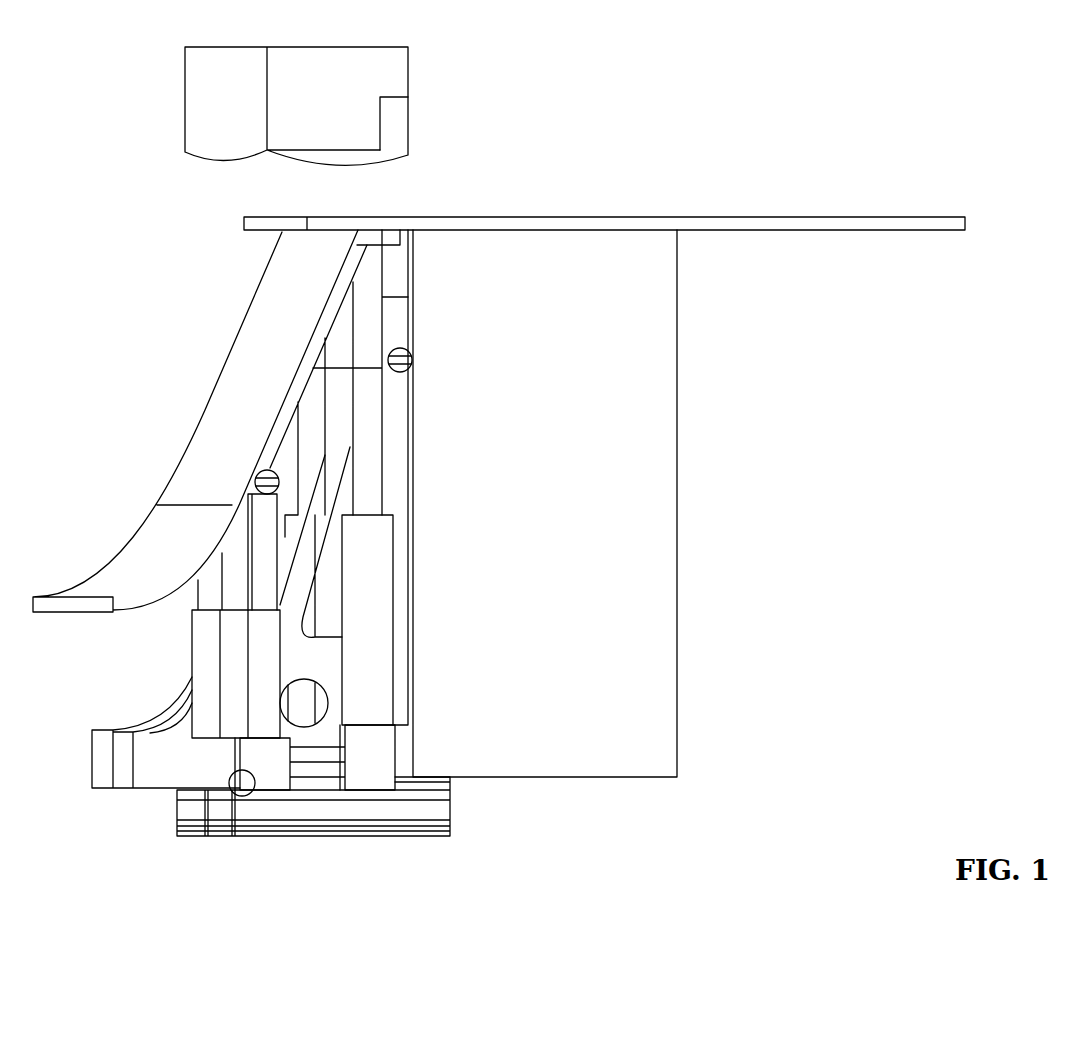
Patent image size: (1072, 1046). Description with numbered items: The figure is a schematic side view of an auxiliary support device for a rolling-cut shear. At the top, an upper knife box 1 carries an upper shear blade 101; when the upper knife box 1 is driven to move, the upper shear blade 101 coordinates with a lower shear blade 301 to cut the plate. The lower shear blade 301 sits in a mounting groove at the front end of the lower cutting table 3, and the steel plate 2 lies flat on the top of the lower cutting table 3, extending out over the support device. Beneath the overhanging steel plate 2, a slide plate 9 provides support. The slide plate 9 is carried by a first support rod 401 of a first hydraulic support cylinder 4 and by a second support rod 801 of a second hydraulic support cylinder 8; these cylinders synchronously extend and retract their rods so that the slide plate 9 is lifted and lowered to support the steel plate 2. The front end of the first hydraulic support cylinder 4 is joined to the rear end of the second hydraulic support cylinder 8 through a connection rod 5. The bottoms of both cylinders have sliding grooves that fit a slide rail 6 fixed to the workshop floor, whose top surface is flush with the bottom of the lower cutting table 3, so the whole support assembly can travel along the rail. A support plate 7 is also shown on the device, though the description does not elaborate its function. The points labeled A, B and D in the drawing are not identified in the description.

The upper knife box 1 is at (397, 85).
The upper shear blade 101 is at (397, 147).
The steel plate 2 is at (413, 220).
The lower cutting table 3 is at (497, 273).
The lower shear blade 301 is at (393, 277).
The pivot point D is at (408, 368).
The first support rod 401 is at (363, 338).
The slide plate 9 is at (253, 408).
The pivot point B is at (253, 480).
The second support rod 801 is at (268, 582).
The second hydraulic support cylinder 8 is at (273, 700).
The support plate 7 is at (190, 737).
The pivot point A is at (227, 784).
The first hydraulic support cylinder 4 is at (375, 608).
The connection rod 5 is at (322, 750).
The slide rail 6 is at (342, 807).